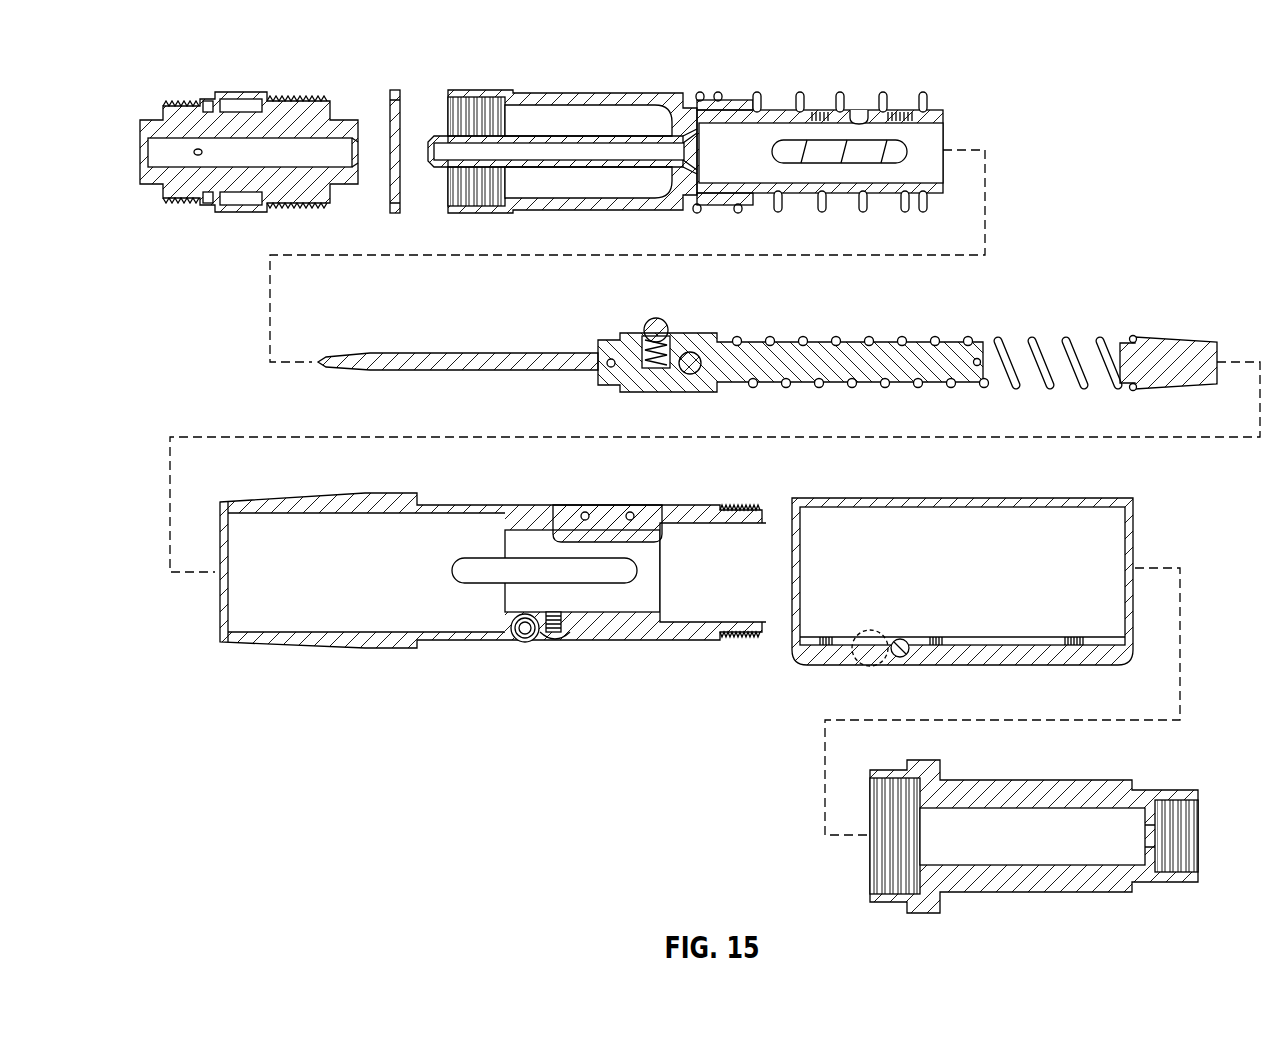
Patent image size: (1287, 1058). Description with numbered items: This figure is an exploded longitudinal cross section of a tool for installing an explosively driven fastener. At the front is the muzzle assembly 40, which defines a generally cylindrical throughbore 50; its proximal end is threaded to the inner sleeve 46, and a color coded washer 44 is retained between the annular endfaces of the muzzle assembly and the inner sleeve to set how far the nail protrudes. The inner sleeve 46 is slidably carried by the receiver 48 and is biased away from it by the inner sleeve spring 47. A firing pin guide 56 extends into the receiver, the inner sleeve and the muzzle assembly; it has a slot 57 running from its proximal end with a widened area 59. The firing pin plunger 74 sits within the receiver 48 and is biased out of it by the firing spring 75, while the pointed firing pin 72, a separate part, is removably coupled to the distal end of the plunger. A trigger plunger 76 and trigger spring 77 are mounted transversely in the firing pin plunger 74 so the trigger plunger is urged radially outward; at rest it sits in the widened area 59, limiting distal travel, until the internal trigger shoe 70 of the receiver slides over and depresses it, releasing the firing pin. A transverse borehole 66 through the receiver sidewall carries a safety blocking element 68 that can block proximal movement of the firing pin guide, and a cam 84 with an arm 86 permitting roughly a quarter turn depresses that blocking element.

The muzzle assembly 40 is at (183, 98).
The color coded washer 44 is at (396, 90).
The inner sleeve 46 is at (572, 92).
The inner sleeve spring 47 is at (890, 104).
The receiver 48 is at (270, 500).
The throughbore 50 is at (290, 147).
The firing pin guide 56 is at (606, 136).
The slot 57 is at (822, 116).
The widened area 59 is at (860, 118).
The transverse borehole 66 is at (530, 645).
The safety blocking element 68 is at (513, 617).
The trigger shoe 70 is at (600, 516).
The firing pin 72 is at (485, 354).
The firing pin plunger 74 is at (880, 350).
The firing spring 75 is at (1036, 345).
The trigger plunger 76 is at (657, 318).
The trigger spring 77 is at (645, 352).
The cam 84 is at (900, 658).
The arm 86 is at (870, 666).